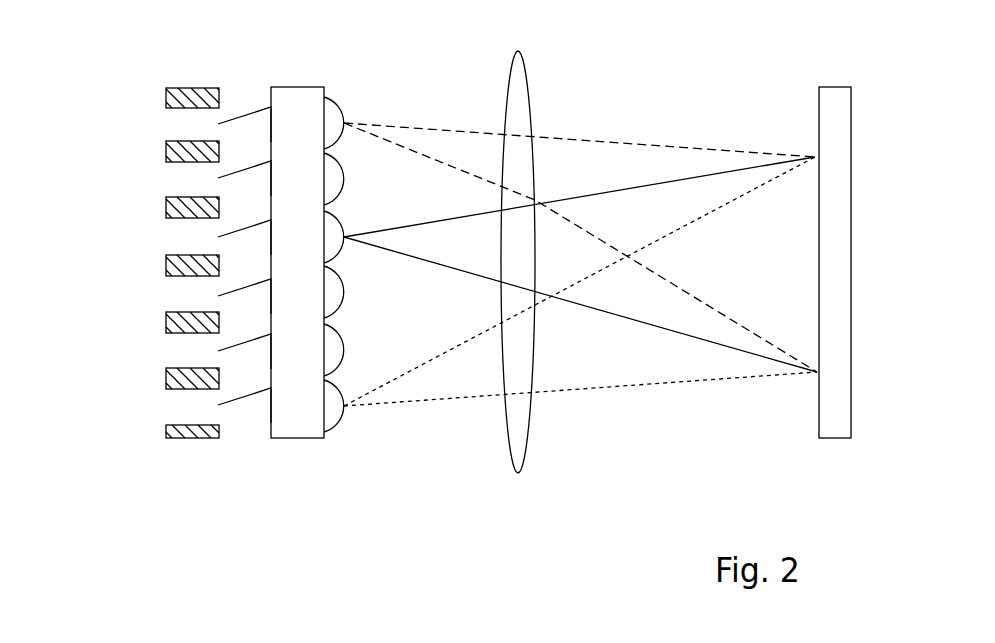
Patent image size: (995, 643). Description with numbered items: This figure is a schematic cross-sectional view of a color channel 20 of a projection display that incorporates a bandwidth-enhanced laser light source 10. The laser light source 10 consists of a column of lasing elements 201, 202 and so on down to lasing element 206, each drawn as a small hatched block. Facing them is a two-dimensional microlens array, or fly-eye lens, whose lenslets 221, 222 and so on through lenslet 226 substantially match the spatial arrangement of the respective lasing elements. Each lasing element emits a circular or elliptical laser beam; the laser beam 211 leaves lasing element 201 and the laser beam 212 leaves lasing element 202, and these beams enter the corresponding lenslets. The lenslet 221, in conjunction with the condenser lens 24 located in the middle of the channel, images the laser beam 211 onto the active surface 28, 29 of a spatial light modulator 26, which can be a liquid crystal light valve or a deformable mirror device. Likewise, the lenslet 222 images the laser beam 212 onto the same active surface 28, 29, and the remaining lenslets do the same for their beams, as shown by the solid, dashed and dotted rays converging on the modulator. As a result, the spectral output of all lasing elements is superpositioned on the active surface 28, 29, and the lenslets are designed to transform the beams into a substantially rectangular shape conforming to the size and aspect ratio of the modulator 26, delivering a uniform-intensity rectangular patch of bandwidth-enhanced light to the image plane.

The bandwidth-enhanced laser light source 10 is at (139, 283).
The lasing element 201 is at (165, 125).
The lasing element 202 is at (165, 190).
The lasing element 206 is at (167, 412).
The color channel 20 is at (269, 302).
The laser beam 211 is at (255, 115).
The laser beam 212 is at (252, 175).
The lenslet 221 is at (335, 105).
The lenslet 222 is at (344, 179).
The lenslet 226 is at (342, 418).
The condenser lens 24 is at (522, 87).
The spatial light modulator 26 is at (835, 432).
The active surface 28 is at (815, 157).
The active surface 29 is at (817, 372).